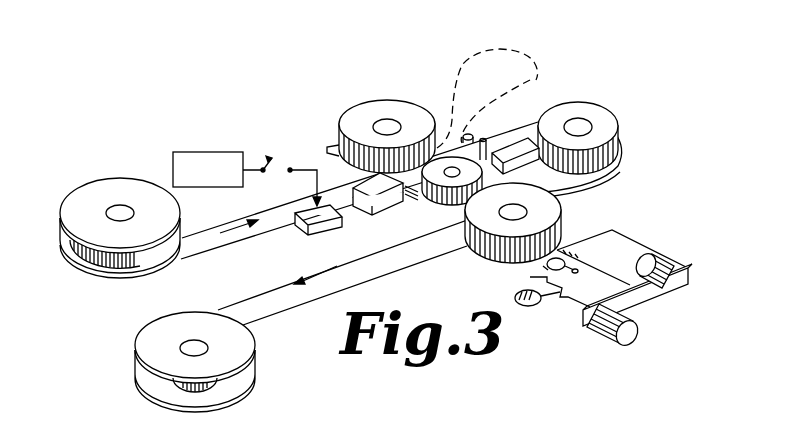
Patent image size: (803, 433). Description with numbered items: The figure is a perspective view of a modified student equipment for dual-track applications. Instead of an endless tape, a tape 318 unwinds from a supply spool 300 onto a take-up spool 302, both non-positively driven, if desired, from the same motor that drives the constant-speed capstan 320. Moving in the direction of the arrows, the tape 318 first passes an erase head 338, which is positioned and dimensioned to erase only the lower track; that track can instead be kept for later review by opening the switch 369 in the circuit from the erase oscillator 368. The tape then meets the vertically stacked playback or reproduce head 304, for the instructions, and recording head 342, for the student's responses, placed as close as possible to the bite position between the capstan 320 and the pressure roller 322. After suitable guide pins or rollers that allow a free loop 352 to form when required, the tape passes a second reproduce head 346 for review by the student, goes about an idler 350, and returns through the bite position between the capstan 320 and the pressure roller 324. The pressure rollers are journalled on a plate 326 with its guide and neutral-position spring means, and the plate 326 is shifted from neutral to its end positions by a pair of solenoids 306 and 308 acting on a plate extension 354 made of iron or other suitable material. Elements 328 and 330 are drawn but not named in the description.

The supply spool 300 is at (88, 193).
The take-up spool 302 is at (155, 331).
The playback or reproduce head 304 is at (375, 186).
The solenoid 306 is at (658, 260).
The solenoid 308 is at (622, 338).
The tape 318 is at (252, 297).
The constant-speed capstan 320 is at (473, 175).
The pressure roller 322 is at (417, 90).
The pressure roller 324 is at (554, 206).
The plate 326 is at (580, 262).
The idler roller 328 is at (545, 263).
The drive wheel 330 is at (547, 304).
The erase head 338 is at (300, 226).
The recording head 342 is at (390, 207).
The second reproduce head 346 is at (530, 118).
The idler 350 is at (607, 118).
The free loop 352 is at (535, 79).
The plate extension 354 is at (668, 288).
The erase oscillator 368 is at (173, 171).
The switch 369 is at (274, 163).